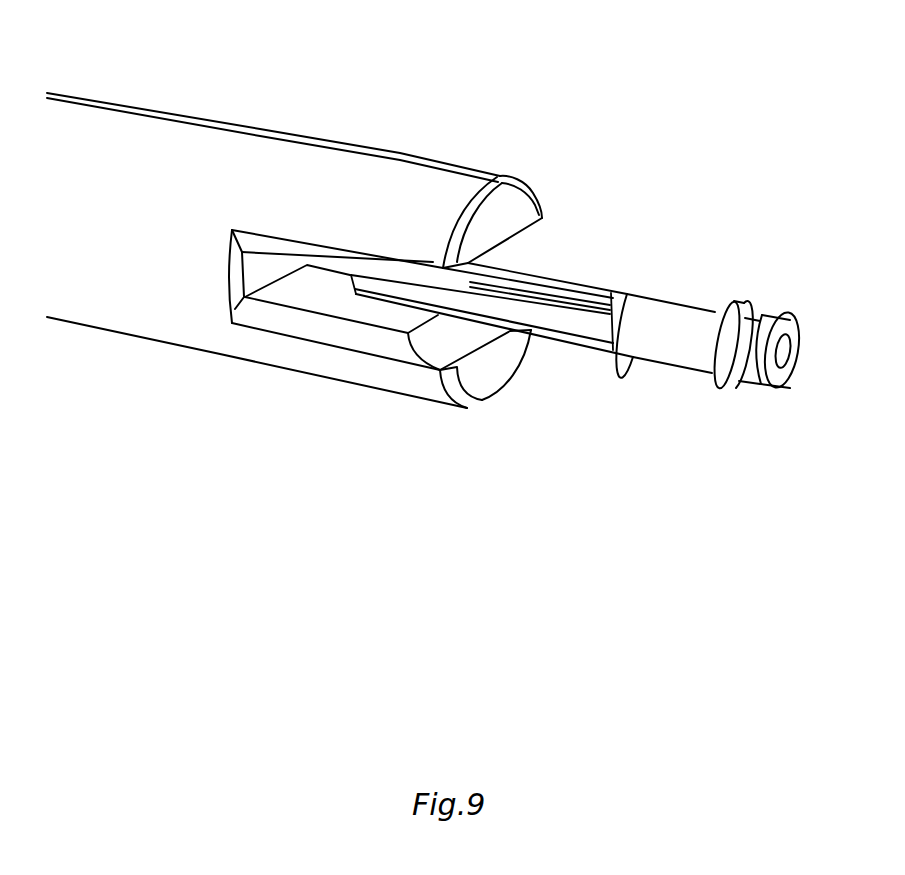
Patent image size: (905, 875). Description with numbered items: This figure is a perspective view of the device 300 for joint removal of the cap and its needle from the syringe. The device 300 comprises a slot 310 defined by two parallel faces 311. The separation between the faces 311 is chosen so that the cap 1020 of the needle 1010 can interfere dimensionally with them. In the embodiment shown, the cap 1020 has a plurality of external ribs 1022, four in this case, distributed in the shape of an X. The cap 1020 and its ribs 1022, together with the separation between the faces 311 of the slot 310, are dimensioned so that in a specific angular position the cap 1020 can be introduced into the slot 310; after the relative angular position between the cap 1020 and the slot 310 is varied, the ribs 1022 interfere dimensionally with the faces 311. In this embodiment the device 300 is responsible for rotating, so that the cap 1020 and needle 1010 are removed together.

The device for joint removal of the cap and needle 300 is at (278, 173).
The slot 310 is at (252, 277).
The parallel faces 311 is at (337, 302).
The external ribs 1022 is at (540, 297).
The cap 1020 is at (660, 317).
The needle 1010 is at (770, 327).